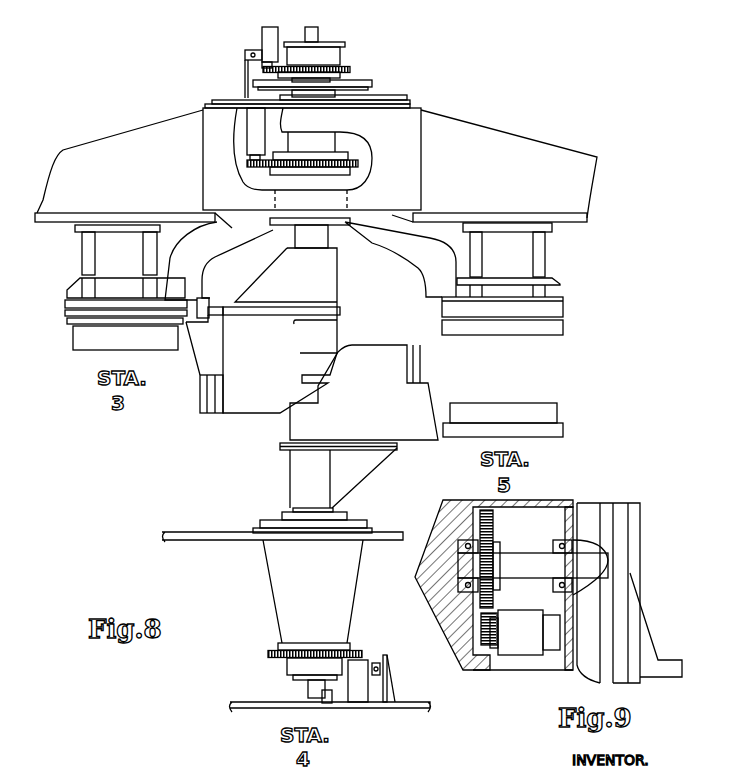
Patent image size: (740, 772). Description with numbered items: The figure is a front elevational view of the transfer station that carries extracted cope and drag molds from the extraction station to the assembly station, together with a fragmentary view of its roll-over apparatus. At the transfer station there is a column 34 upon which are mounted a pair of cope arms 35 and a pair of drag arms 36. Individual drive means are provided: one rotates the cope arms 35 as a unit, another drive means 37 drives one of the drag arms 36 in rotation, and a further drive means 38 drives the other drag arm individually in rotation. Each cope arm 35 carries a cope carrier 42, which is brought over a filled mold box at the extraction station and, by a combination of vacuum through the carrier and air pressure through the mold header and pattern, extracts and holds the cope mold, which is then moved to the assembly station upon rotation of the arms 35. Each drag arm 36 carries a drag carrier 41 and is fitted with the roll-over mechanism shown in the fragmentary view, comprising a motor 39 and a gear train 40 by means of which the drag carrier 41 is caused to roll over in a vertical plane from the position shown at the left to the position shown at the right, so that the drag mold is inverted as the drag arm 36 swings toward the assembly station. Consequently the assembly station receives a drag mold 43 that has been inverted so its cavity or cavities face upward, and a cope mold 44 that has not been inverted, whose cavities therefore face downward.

In FIG. 8, the column 34 is at (328, 240).
In FIG. 8, the cope arms 35 is at (210, 245).
In FIG. 8, the drag arms 36 is at (252, 128).
In FIG. 8, the drive means for one drag arm 37 is at (262, 29).
In FIG. 8, the drive means for the other drag arm 38 is at (360, 700).
In FIG. 9, the motor 39 is at (522, 647).
In FIG. 9, the gear train 40 is at (483, 655).
In FIG. 8, the drag carrier 41 is at (72, 328).
In FIG. 8, the cope carrier 42 is at (72, 302).
In FIG. 8, the drag mold 43 is at (555, 412).
In FIG. 8, the cope mold 44 is at (563, 332).